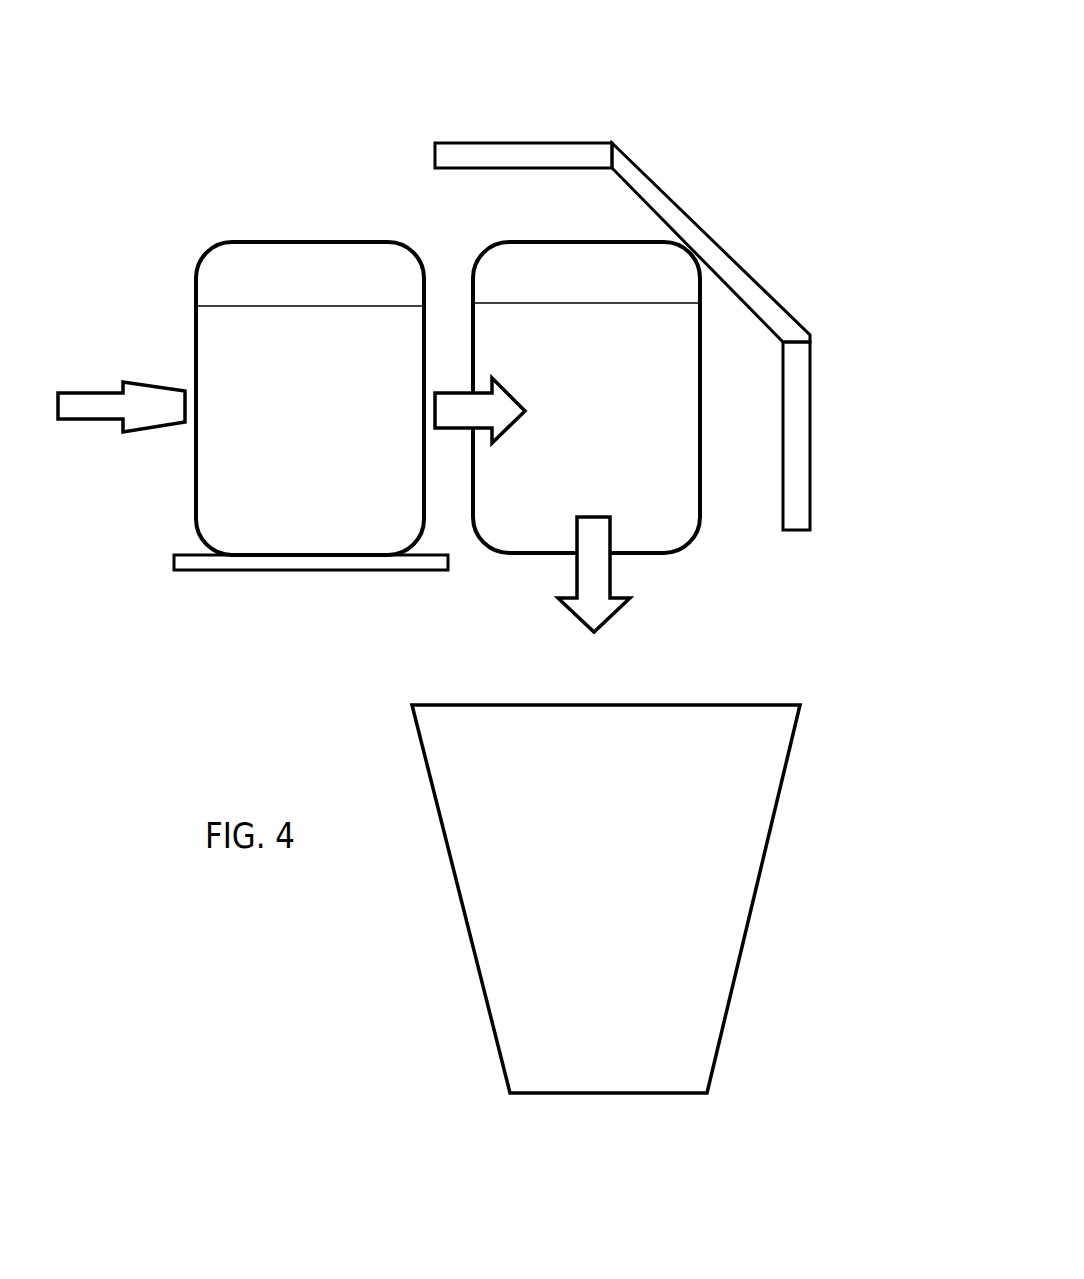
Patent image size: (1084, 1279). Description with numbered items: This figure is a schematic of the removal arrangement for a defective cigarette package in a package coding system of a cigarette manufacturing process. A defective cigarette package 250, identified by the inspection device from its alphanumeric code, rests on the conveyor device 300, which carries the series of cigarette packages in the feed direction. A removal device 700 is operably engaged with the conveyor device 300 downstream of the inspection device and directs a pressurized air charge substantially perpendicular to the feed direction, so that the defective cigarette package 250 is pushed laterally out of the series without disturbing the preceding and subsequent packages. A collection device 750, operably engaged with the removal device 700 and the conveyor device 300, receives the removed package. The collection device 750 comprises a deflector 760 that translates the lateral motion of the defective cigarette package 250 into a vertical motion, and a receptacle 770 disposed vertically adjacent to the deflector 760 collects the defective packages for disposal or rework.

The defective cigarette package 250 is at (515, 280).
The conveyor device 300 is at (212, 572).
The removal device 700 is at (162, 417).
The collection device 750 is at (622, 279).
The deflector 760 is at (705, 243).
The receptacle 770 is at (450, 817).